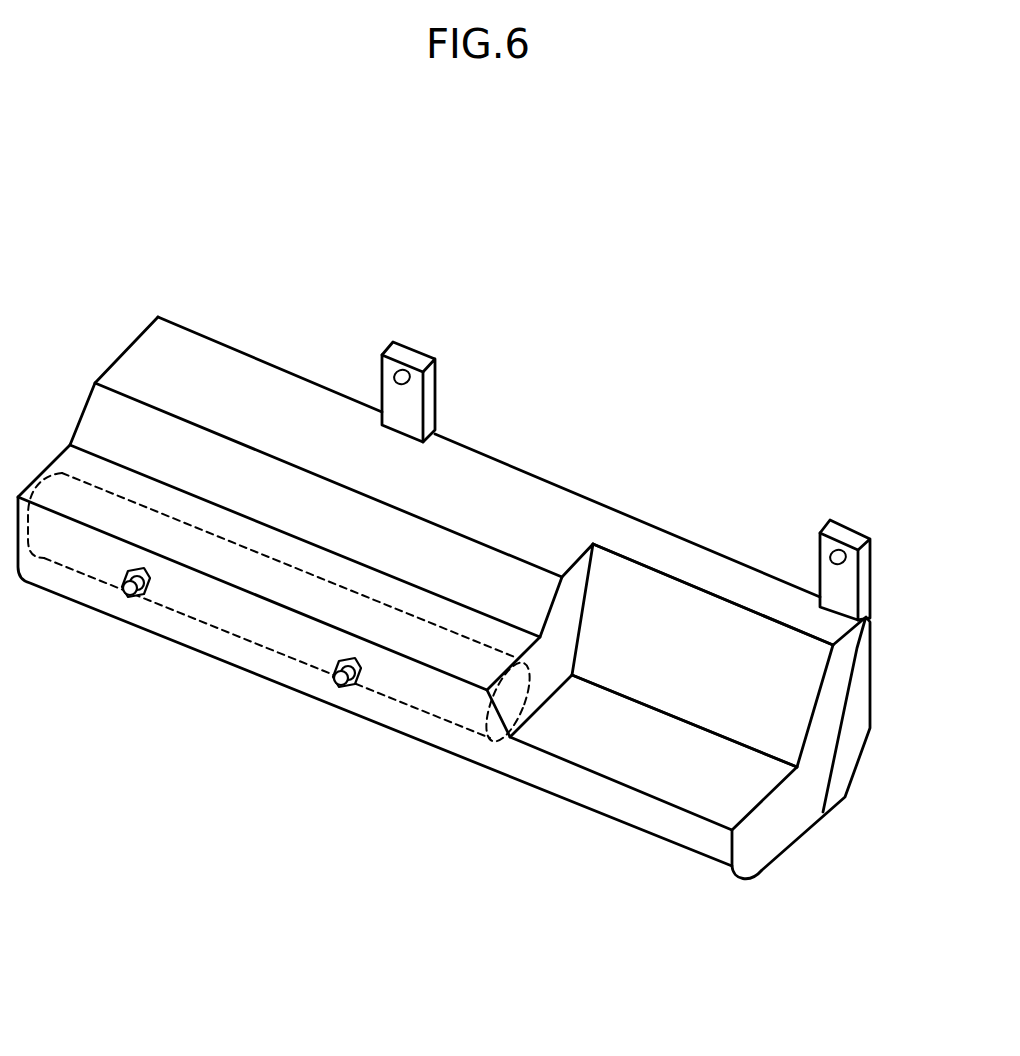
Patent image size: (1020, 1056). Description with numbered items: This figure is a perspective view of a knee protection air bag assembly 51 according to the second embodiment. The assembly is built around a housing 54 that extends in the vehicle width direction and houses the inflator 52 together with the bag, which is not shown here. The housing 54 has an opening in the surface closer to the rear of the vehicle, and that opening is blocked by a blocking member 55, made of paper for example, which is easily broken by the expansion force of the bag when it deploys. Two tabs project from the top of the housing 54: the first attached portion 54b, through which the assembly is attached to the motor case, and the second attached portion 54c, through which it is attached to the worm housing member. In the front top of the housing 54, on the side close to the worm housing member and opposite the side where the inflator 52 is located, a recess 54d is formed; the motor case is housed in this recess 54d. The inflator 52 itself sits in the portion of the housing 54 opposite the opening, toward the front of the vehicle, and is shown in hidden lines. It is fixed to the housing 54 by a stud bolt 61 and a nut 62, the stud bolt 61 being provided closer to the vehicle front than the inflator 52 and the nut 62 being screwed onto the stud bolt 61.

The air bag assembly 51 is at (477, 568).
The inflator 52 is at (440, 722).
The housing 54 is at (147, 365).
The first attached portion 54b is at (848, 530).
The second attached portion 54c is at (413, 345).
The recess 54d is at (692, 643).
The blocking member 55 is at (865, 704).
The stud bolt 61 is at (126, 598).
The nut 62 is at (147, 596).